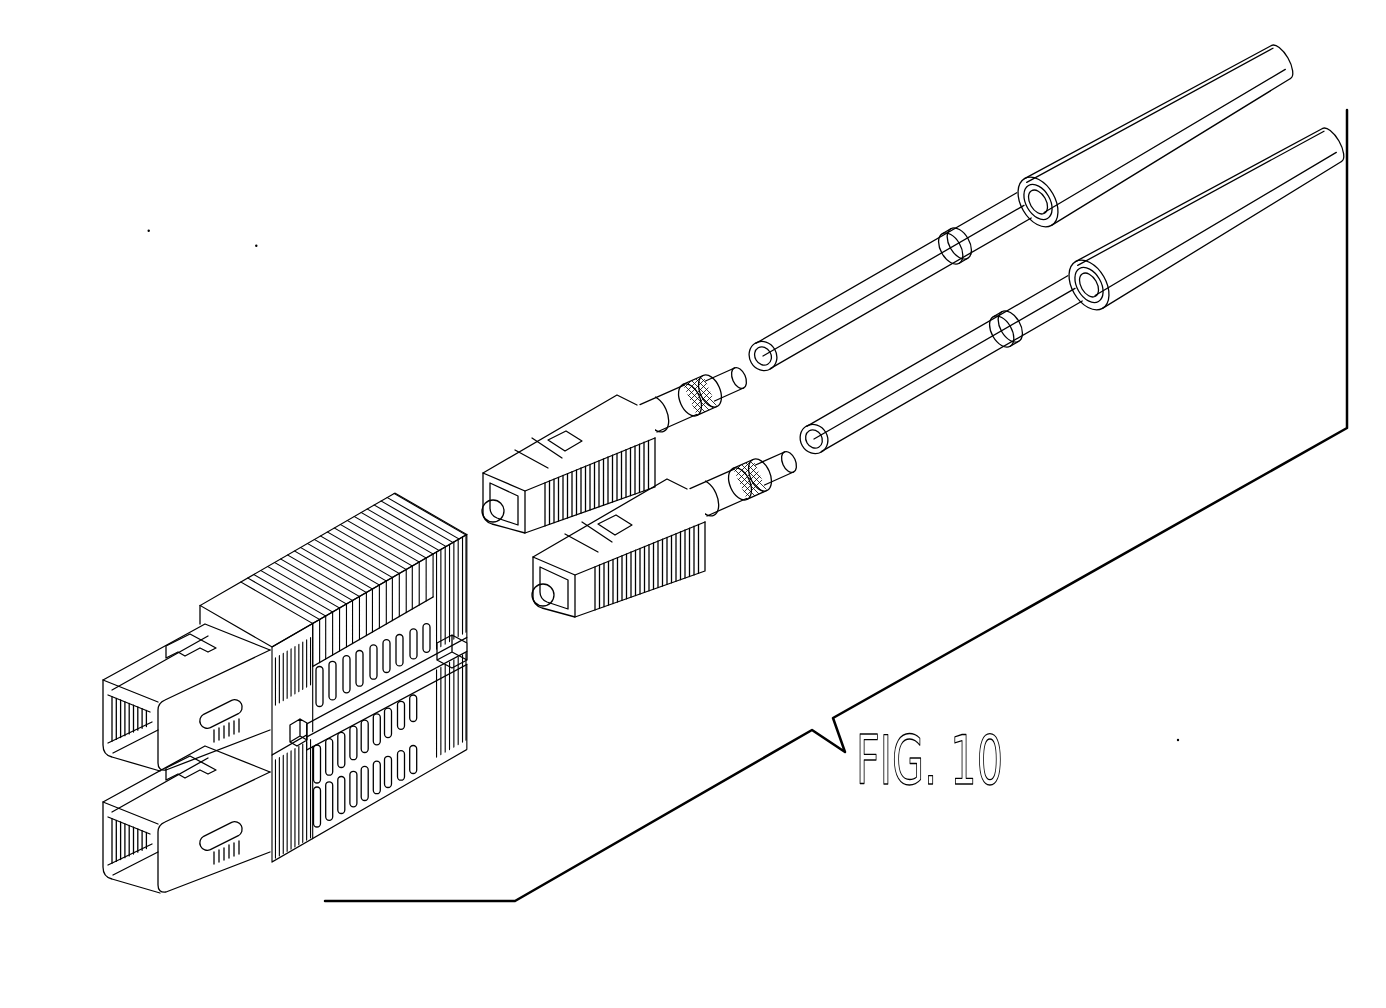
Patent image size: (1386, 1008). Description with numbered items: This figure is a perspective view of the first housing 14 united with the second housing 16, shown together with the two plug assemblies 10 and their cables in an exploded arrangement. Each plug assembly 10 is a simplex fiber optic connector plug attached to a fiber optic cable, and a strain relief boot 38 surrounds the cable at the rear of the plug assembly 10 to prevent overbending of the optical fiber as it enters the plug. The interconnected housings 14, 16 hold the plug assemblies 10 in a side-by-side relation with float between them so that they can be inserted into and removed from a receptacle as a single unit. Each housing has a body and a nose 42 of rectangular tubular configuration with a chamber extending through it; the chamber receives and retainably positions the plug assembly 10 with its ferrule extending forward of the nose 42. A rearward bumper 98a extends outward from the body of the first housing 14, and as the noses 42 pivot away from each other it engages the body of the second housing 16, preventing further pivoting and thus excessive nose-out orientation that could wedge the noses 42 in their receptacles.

The plug assembly 10 is at (577, 406).
The first housing 14 is at (393, 517).
The second housing 16 is at (285, 774).
The strain relief boot 38 is at (1123, 271).
The nose 42 is at (183, 867).
The rearward bumper 98a is at (462, 641).